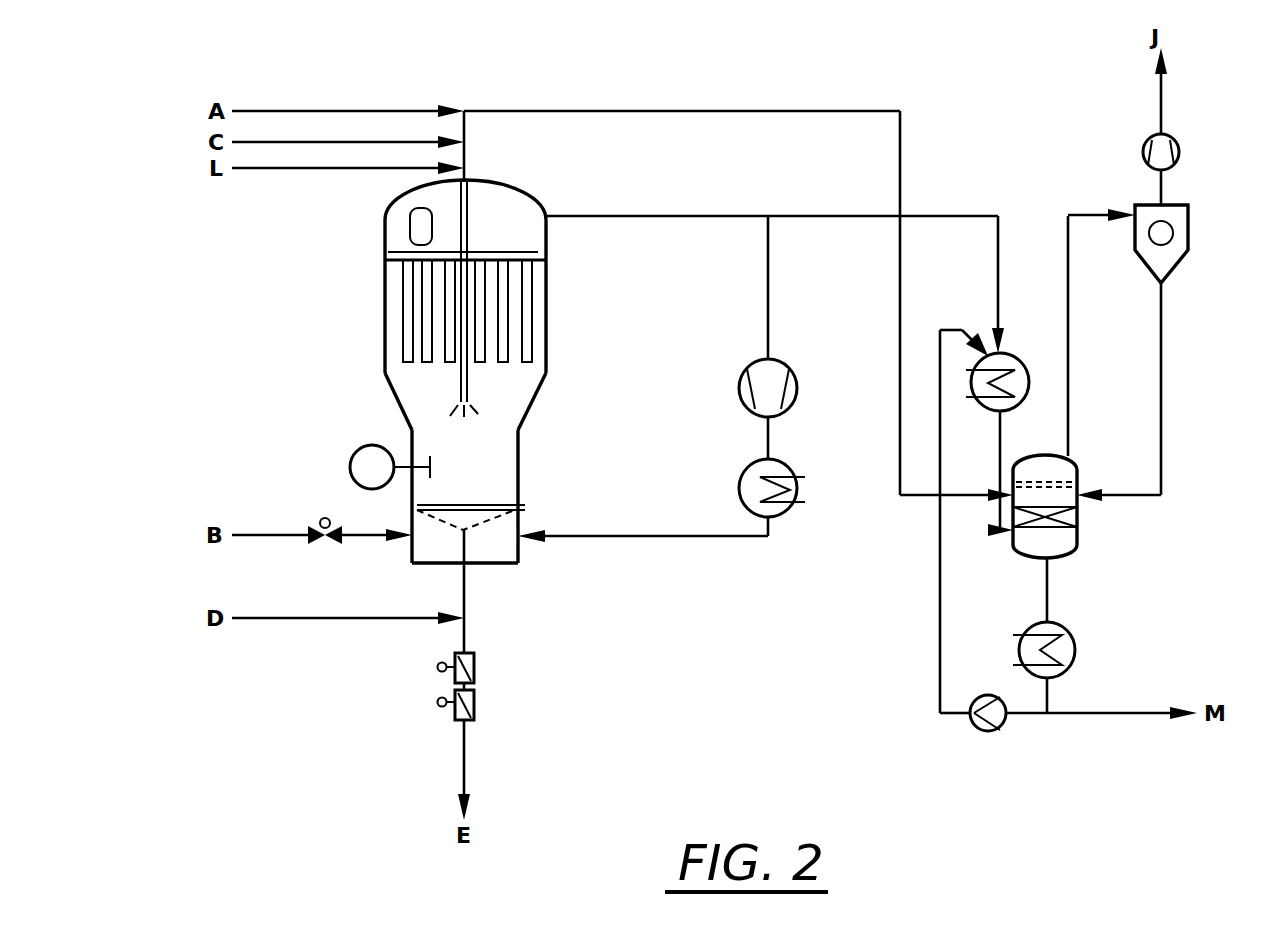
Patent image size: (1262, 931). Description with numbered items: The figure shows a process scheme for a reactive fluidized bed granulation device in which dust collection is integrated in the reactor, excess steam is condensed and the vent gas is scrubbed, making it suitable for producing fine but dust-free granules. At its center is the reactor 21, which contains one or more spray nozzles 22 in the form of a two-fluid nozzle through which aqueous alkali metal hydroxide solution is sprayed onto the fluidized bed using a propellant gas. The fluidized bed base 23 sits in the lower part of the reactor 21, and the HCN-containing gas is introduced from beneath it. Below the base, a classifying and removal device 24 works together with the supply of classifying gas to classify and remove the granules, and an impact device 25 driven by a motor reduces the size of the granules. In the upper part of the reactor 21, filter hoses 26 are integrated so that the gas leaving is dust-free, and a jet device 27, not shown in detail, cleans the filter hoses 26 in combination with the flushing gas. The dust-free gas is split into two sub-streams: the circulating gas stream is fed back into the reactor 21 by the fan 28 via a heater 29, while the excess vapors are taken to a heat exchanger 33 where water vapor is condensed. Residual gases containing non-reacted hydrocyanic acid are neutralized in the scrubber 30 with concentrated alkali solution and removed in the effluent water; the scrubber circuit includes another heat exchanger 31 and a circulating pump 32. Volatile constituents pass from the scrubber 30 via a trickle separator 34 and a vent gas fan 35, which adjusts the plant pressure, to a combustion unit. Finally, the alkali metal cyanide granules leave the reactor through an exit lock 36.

The reactor 21 is at (393, 393).
The spray nozzle 22 is at (473, 412).
The fluidized bed base 23 is at (505, 510).
The classifying and removal device 24 is at (466, 590).
The impact device 25 is at (350, 467).
The filter hoses 26 is at (428, 318).
The jet device 27 is at (385, 252).
The fan 28 is at (757, 365).
The heater 29 is at (745, 473).
The scrubber 30 is at (1060, 540).
The heat exchanger 31 is at (1076, 648).
The circulating pump 32 is at (998, 728).
The heat exchanger 33 is at (1012, 360).
The trickle separator 34 is at (1178, 232).
The vent gas fan 35 is at (1180, 150).
The exit lock 36 is at (476, 667).